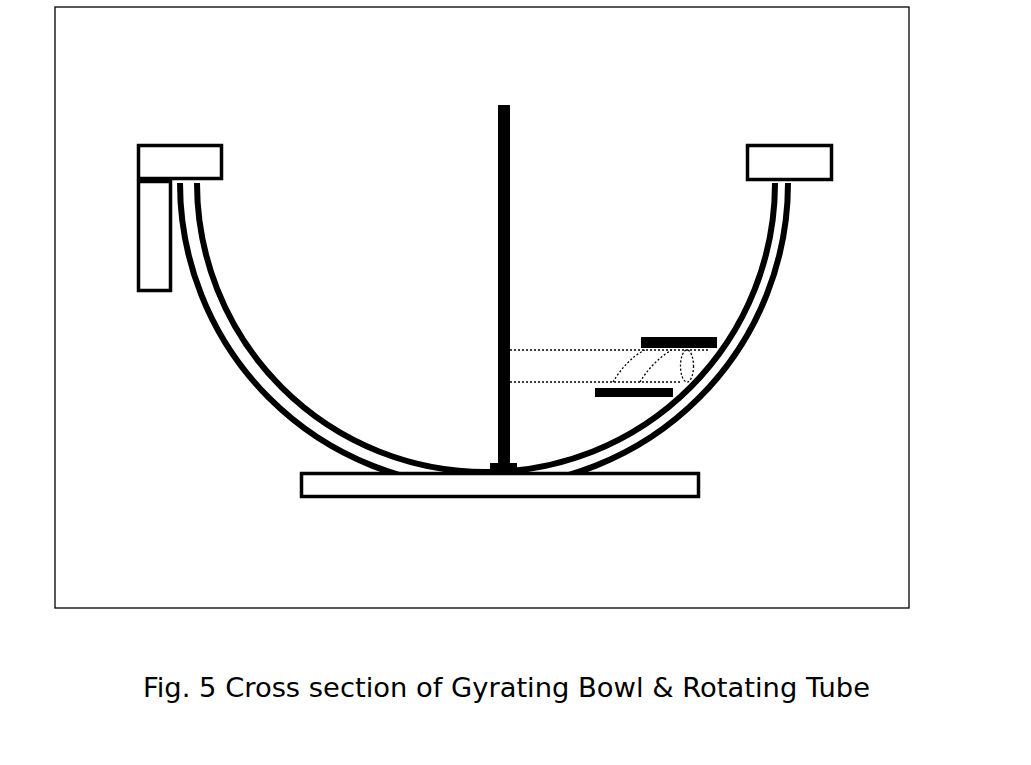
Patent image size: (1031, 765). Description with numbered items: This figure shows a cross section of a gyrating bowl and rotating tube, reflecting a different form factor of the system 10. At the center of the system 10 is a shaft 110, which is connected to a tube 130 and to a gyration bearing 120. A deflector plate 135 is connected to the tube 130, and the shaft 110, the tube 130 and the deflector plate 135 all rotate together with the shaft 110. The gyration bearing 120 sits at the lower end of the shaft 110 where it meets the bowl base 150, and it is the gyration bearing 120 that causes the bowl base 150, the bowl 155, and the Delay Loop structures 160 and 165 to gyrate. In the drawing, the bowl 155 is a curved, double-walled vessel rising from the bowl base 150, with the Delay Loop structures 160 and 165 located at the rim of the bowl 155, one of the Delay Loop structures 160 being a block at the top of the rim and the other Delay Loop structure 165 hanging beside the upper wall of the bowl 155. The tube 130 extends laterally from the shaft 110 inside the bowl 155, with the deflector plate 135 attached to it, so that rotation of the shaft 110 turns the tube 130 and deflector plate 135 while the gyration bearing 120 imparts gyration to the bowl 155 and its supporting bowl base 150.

The system 10 is at (925, 241).
The shaft 110 is at (490, 115).
The gyration bearing 120 is at (492, 459).
The tube 130 is at (555, 347).
The deflector plate 135 is at (657, 331).
The base plate 150 is at (556, 493).
The bowl 155 is at (256, 352).
The Delay Loop structure 160 is at (173, 137).
The Delay Loop structure 165 is at (148, 306).